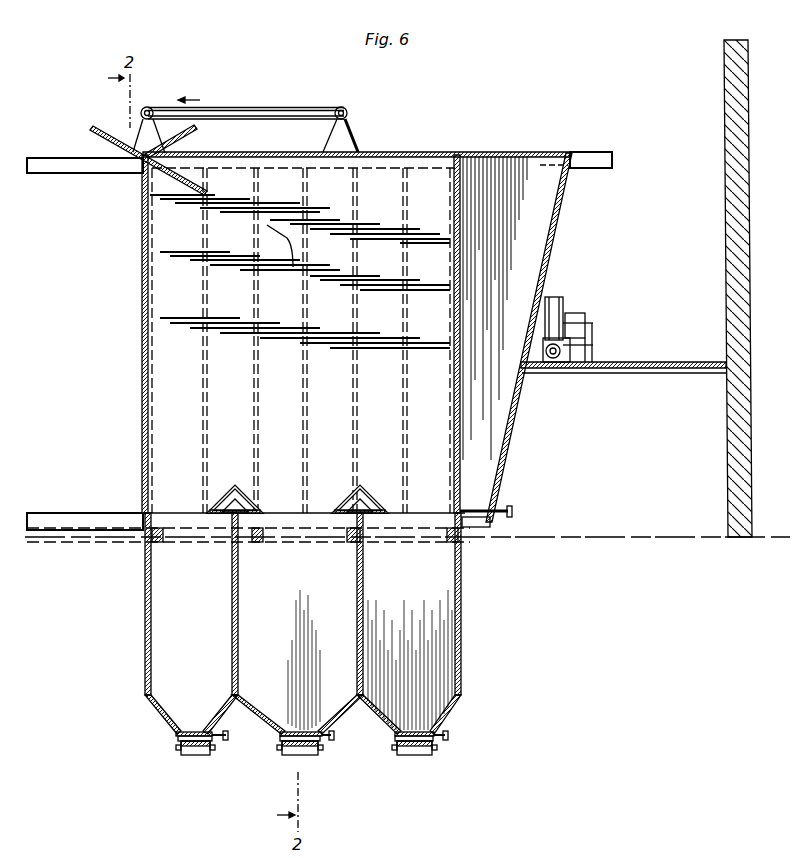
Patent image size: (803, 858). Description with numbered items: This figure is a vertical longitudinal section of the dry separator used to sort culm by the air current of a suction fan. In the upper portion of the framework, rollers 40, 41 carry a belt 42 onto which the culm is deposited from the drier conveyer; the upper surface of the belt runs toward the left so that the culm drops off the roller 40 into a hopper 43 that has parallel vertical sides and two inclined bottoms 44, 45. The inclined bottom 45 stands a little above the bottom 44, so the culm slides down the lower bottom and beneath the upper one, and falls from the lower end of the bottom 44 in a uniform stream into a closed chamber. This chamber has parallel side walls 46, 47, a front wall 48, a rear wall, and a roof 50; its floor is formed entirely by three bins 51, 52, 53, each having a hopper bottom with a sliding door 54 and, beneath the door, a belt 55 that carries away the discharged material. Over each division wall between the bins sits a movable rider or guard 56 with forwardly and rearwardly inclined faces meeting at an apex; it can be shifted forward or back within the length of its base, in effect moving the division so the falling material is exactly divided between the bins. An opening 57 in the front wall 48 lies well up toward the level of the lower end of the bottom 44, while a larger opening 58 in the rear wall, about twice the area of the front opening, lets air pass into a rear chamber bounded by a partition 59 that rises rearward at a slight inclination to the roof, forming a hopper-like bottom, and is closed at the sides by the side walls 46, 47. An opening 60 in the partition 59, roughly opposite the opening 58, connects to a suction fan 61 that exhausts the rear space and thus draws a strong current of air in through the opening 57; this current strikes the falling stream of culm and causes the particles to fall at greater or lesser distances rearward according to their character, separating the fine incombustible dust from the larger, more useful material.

The roller 40 is at (150, 108).
The roller 41 is at (350, 113).
The belt 42 is at (287, 107).
The hopper 43 is at (123, 134).
The inclined bottom 44 is at (113, 139).
The inclined bottom 45 is at (178, 147).
The side wall 46 is at (145, 352).
The side wall 47 is at (461, 268).
The front wall 48 is at (300, 298).
The roof 50 is at (413, 152).
The bin 51 is at (191, 624).
The bin 52 is at (297, 624).
The bin 53 is at (409, 624).
The sliding door 54 is at (222, 738).
The belt 55 is at (195, 757).
The movable rider or guard 56 is at (233, 490).
The opening 57 is at (143, 241).
The opening 58 is at (458, 330).
The partition 59 is at (553, 218).
The opening 60 is at (540, 333).
The suction fan 61 is at (565, 310).